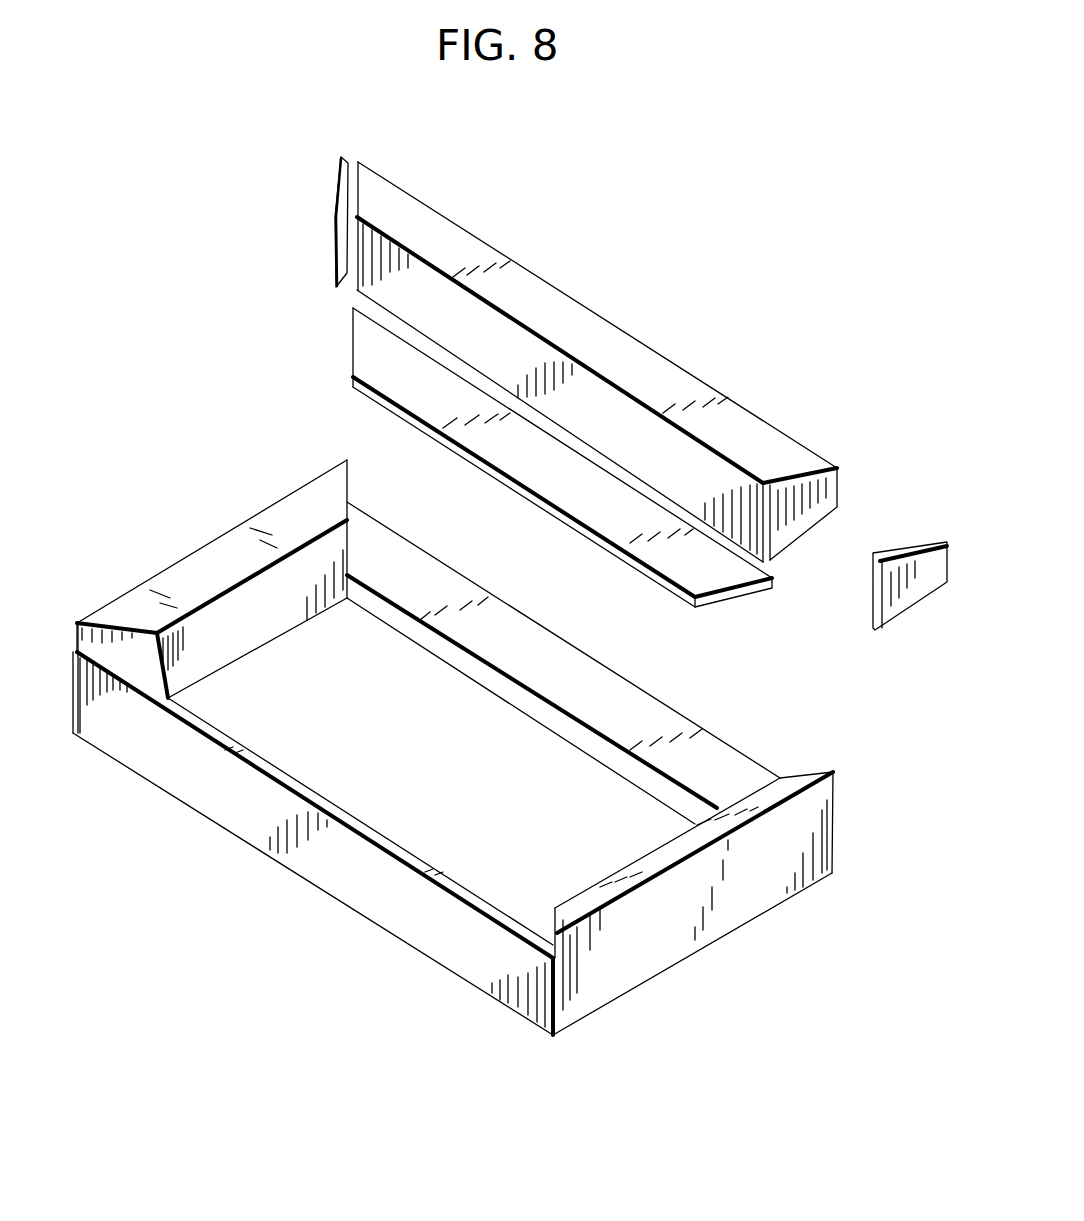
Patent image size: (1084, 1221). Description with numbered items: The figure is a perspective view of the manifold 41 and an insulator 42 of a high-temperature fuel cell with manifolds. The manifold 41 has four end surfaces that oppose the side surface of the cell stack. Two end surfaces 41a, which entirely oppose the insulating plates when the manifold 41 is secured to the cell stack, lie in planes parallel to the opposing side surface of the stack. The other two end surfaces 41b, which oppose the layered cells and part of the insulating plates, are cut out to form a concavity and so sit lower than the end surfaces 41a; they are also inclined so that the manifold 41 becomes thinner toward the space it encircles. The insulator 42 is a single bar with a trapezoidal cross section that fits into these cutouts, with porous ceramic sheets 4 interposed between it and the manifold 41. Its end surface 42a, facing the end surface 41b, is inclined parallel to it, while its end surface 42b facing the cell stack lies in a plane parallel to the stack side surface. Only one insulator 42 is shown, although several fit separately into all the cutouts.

The porous ceramic sheet 4 is at (337, 235).
The manifold 41 is at (222, 493).
The end surface 41a is at (185, 575).
The end surface 41b is at (328, 807).
The insulator 42 is at (647, 362).
The end surface 42a is at (785, 557).
The end surface 42b is at (540, 305).